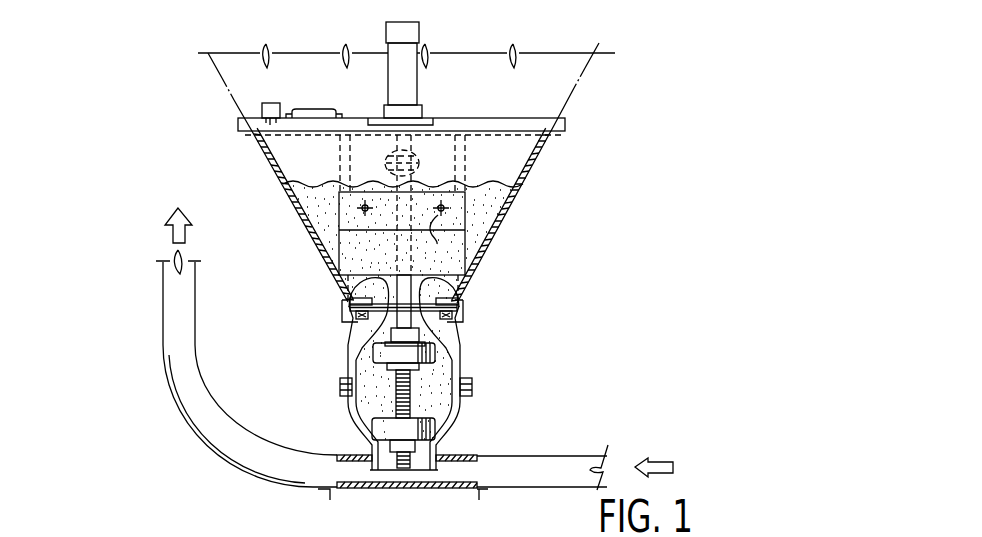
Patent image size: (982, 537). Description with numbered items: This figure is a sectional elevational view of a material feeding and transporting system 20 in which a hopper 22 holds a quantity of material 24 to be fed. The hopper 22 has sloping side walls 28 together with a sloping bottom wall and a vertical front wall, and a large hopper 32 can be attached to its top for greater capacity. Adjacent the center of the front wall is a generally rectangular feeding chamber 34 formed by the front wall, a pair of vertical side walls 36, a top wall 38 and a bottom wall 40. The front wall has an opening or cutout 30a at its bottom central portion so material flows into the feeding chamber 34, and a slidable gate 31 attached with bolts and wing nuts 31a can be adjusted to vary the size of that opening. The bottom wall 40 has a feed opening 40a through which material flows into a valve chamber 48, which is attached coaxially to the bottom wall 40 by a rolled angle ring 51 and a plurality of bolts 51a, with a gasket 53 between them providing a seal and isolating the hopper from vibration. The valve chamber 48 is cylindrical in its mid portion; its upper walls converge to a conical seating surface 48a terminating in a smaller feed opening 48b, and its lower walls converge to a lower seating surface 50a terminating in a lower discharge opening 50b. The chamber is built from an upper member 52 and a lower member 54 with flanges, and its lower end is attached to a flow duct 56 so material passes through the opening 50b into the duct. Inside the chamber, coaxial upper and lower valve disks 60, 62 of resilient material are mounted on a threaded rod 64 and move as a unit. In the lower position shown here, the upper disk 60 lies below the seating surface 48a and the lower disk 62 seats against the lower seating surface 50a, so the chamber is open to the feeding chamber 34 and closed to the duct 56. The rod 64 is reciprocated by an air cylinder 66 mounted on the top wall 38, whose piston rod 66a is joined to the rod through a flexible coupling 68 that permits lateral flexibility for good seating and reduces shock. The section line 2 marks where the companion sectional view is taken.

The section line 2- 2 is at (402, 35).
The material feeding and transporting system 20 is at (570, 344).
The hopper 22 is at (489, 207).
The material 24 is at (523, 175).
The sloping side walls 28 is at (332, 256).
The opening or cutout 30a is at (472, 234).
The slidable gate 31 is at (469, 199).
The bolts and wing nuts 31a is at (437, 243).
The large hopper 32 is at (576, 89).
The feeding chamber 34 is at (334, 205).
The vertical side walls 36 is at (346, 230).
The top wall 38 is at (362, 135).
The bottom wall 40 is at (352, 302).
The feed opening 40a is at (462, 296).
The valve chamber 48 is at (466, 372).
The conical seating surface 48a is at (462, 348).
The feed opening 48b is at (345, 284).
The lower seating surface 50a is at (458, 432).
The lower discharge opening 50b is at (400, 470).
The rolled angle ring 51 is at (463, 326).
The bolts 51a is at (466, 318).
The upper member 52 is at (380, 352).
The gasket 53 is at (465, 306).
The lower member 54 is at (352, 420).
The flow duct 56 is at (252, 468).
The upper valve disk 60 is at (355, 365).
The lower valve disk 62 is at (397, 430).
The threaded rod 64 is at (420, 416).
The air cylinder 66 is at (408, 91).
The piston rod 66a is at (387, 157).
The flexible coupling 68 is at (468, 160).